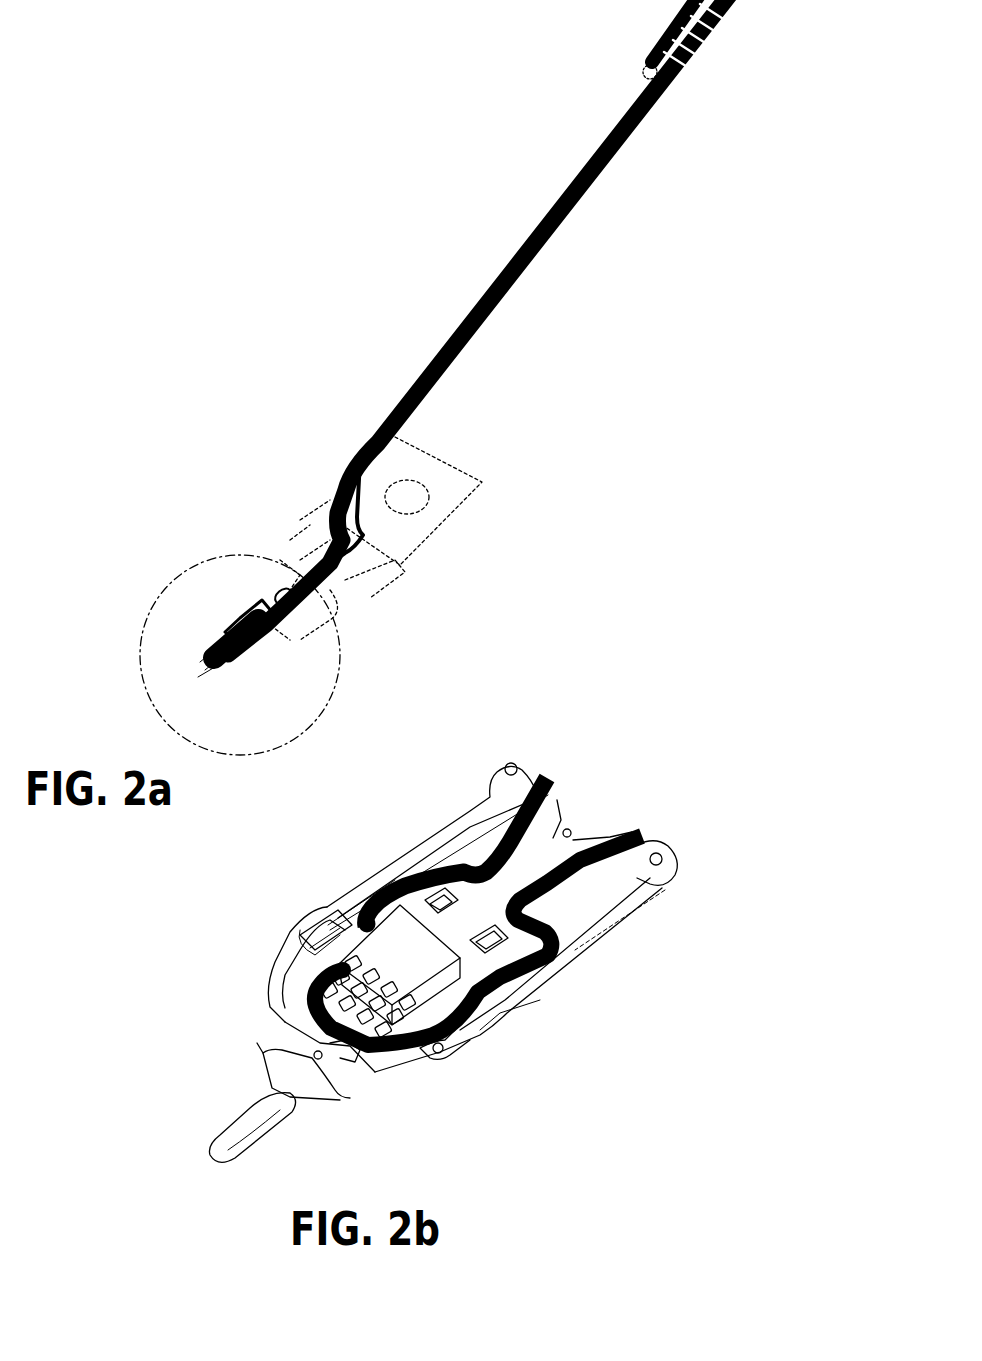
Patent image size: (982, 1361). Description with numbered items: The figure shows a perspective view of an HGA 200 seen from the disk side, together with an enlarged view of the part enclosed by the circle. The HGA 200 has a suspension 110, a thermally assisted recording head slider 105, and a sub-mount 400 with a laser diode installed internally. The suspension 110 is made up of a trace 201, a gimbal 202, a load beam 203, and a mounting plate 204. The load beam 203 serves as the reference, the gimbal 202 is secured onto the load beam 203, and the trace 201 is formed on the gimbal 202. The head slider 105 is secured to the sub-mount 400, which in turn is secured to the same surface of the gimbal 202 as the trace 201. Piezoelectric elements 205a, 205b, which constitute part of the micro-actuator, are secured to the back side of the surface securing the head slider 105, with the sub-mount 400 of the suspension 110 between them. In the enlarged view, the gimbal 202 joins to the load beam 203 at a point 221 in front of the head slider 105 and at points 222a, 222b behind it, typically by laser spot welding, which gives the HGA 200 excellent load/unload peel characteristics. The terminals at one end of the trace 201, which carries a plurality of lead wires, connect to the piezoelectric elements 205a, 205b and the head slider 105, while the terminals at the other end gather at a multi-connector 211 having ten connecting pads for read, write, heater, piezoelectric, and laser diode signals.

In FIG. 2a, the HGA 200 is at (290, 310).
In FIG. 2a, the trace 201 is at (500, 280).
In FIG. 2b, the trace 201 is at (573, 940).
In FIG. 2a, the multi-connector 211 is at (672, 40).
In FIG. 2a, the mounting plate 204 is at (480, 490).
In FIG. 2a, the suspension 110 is at (422, 577).
In FIG. 2b, the suspension 110 is at (553, 1010).
In FIG. 2a, the load beam 203 is at (340, 598).
In FIG. 2b, the load beam 203 is at (660, 900).
In FIG. 2a, the gimbal 202 is at (245, 665).
In FIG. 2b, the gimbal 202 is at (470, 1030).
In FIG. 2a, the sub-mount 400 is at (245, 610).
In FIG. 2b, the sub-mount 400 is at (367, 1050).
In FIG. 2a, the head slider 105 is at (232, 640).
In FIG. 2b, the head slider 105 is at (320, 921).
In FIG. 2b, the point 222a is at (510, 762).
In FIG. 2b, the point 222b is at (660, 850).
In FIG. 2b, the piezoelectric element 205a is at (405, 885).
In FIG. 2b, the piezoelectric element 205b is at (480, 980).
In FIG. 2b, the point 221 is at (267, 1053).